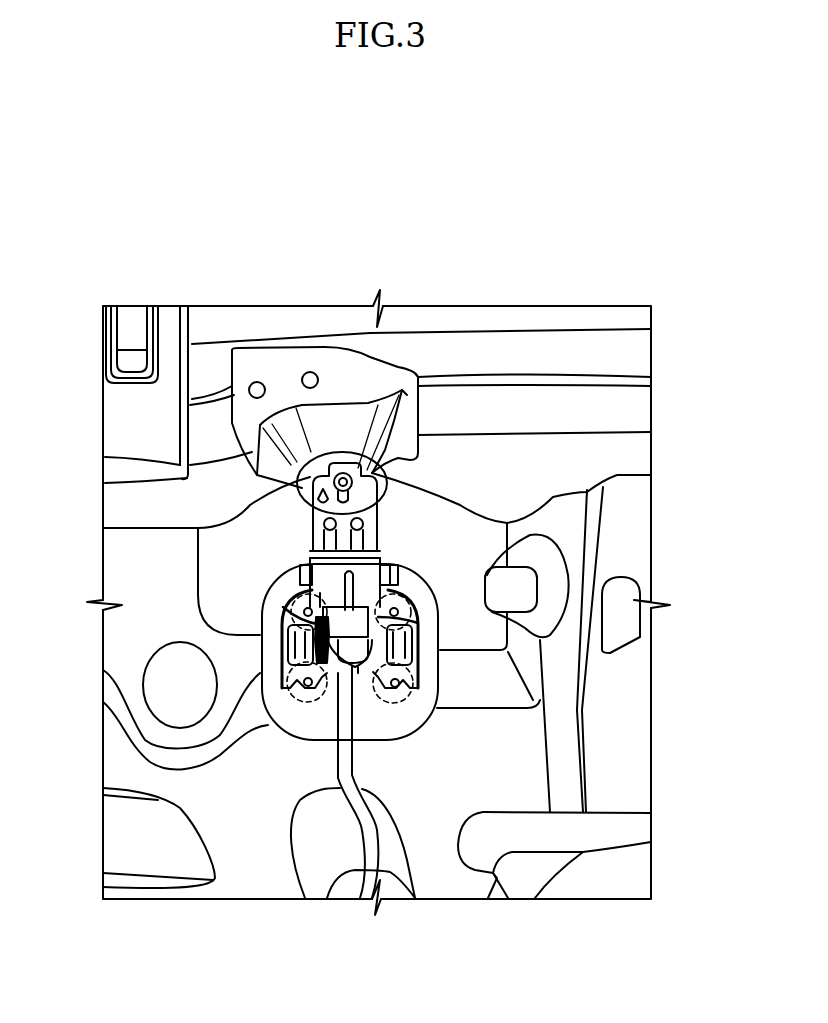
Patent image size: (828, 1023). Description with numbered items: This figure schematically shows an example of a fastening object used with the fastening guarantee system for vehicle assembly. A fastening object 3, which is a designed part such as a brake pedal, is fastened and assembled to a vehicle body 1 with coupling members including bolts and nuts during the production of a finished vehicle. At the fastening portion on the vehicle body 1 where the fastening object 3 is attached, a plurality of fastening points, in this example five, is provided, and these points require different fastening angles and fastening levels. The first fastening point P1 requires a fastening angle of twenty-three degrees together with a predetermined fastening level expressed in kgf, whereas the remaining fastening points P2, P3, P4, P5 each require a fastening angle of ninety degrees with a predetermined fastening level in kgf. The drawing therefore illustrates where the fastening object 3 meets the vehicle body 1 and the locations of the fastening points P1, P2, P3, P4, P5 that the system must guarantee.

The vehicle body 1 is at (575, 458).
The fastening object 3 is at (423, 665).
The first fastening point P1 is at (296, 596).
The fastening point P2 is at (340, 470).
The fastening point P3 is at (408, 595).
The fastening point P4 is at (407, 700).
The fastening point P5 is at (300, 697).